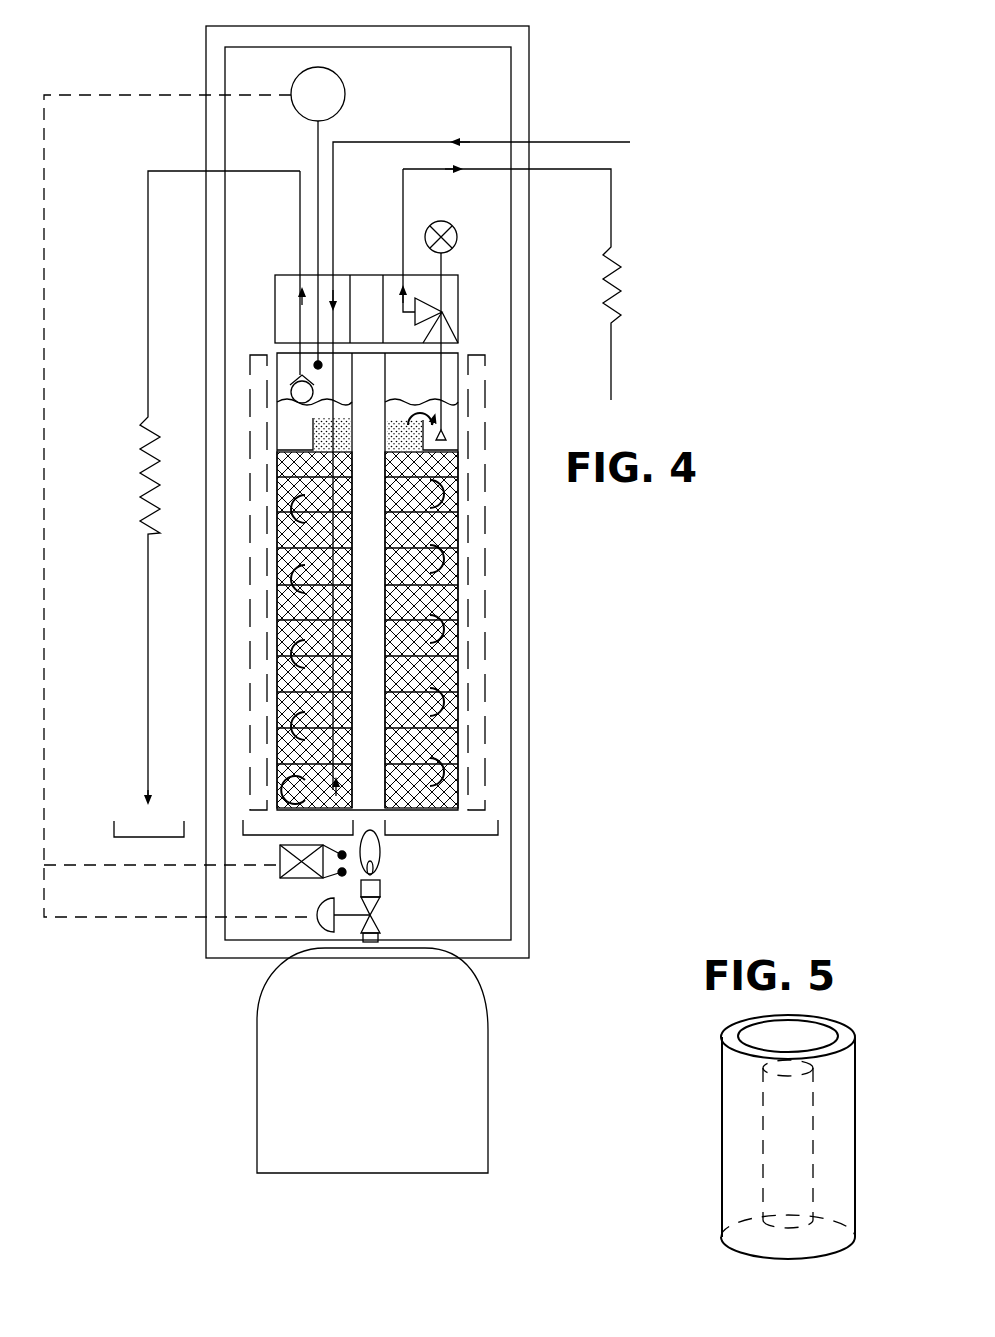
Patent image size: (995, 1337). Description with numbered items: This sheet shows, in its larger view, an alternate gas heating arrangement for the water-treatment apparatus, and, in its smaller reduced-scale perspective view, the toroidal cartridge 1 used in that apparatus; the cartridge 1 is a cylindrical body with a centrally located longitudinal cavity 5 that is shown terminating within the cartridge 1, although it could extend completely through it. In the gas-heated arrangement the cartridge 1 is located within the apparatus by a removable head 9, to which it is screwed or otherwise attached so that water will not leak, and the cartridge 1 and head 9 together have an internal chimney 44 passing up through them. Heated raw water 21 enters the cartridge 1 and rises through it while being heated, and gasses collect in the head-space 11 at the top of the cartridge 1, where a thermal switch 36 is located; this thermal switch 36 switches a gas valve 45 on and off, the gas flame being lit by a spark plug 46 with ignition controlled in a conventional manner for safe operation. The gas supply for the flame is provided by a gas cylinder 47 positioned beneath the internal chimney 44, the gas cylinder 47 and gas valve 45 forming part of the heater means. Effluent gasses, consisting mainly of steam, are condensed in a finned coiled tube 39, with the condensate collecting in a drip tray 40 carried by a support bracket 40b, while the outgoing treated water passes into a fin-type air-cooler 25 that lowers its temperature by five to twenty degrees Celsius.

In FIG. 4, the cartridge 1 is at (460, 707).
In FIG. 5, the cartridge 1 is at (745, 1097).
In FIG. 5, the longitudinal cavity 5 is at (783, 1160).
In FIG. 4, the removable head 9 is at (452, 291).
In FIG. 4, the head-space 11 is at (395, 380).
In FIG. 4, the heated raw water 21 is at (610, 140).
In FIG. 4, the air-cooler 25 is at (607, 293).
In FIG. 4, the thermal switch 36 is at (346, 90).
In FIG. 4, the finned coiled tube 39 is at (144, 480).
In FIG. 4, the drip tray 40 is at (148, 838).
In FIG. 4, the support bracket 40b is at (465, 836).
In FIG. 4, the internal chimney 44 is at (375, 612).
In FIG. 4, the gas valve 45 is at (372, 915).
In FIG. 4, the spark plug 46 is at (302, 875).
In FIG. 4, the gas cylinder 47 is at (273, 1118).